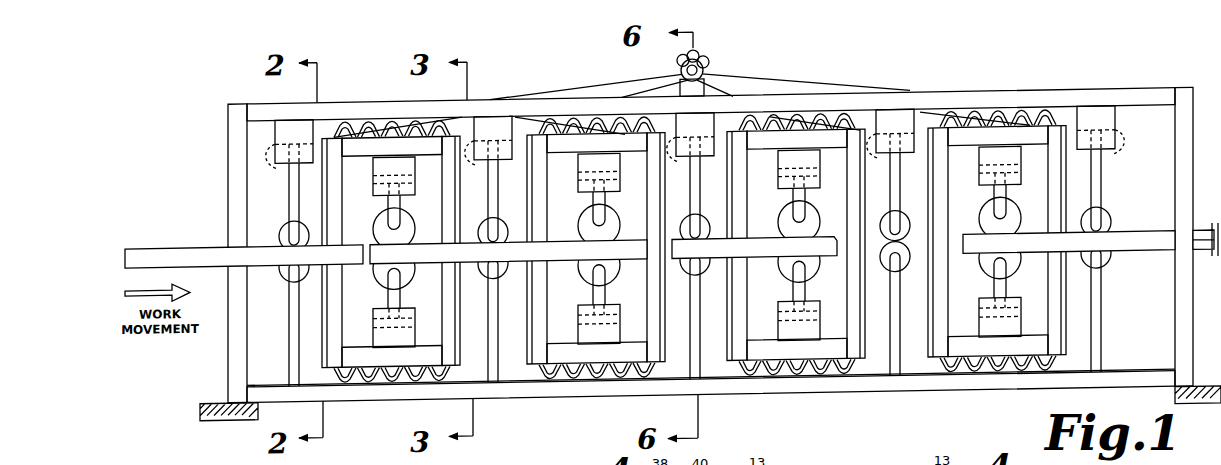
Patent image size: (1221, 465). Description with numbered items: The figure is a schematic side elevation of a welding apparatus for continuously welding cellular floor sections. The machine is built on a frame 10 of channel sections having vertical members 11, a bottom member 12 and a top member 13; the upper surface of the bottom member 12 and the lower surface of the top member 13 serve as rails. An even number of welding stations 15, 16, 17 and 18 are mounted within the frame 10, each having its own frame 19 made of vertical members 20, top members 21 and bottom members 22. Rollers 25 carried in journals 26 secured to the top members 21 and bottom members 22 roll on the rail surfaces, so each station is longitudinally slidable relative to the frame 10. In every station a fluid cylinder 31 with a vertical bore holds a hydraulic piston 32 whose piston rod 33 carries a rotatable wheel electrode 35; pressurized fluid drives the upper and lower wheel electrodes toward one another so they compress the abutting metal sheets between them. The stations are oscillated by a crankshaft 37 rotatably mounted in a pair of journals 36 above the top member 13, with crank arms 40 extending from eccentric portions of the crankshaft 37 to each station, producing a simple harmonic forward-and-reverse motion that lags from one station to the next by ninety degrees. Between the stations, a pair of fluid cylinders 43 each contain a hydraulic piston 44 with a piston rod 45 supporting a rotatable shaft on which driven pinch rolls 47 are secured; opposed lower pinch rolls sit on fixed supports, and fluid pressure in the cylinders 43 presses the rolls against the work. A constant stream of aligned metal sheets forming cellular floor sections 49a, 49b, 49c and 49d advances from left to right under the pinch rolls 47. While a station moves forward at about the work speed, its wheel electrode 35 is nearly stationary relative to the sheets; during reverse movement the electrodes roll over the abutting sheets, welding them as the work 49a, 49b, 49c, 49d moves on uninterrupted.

The frame 10 is at (1094, 94).
The vertical members 11 is at (232, 367).
The bottom member 12 is at (910, 392).
The top member 13 is at (1000, 97).
The welding station 15 is at (371, 357).
The welding station 16 is at (590, 357).
The welding station 17 is at (773, 355).
The welding station 18 is at (970, 359).
The frame 19 is at (455, 148).
The vertical members 20 is at (337, 362).
The top members 21 is at (1008, 148).
The bottom members 22 is at (1022, 357).
The rollers 25 is at (345, 116).
The journals 26 is at (362, 116).
The fluid cylinder 31 is at (1007, 168).
The hydraulic piston 32 is at (979, 179).
The piston rod 33 is at (1007, 192).
The wheel electrode 35 is at (987, 216).
The journals 36 is at (704, 76).
The crankshaft 37 is at (699, 62).
The crank arms 40 is at (648, 92).
The fluid cylinders 43 is at (1104, 133).
The hydraulic piston 44 is at (695, 157).
The piston rod 45 is at (1101, 170).
The pinch rolls 47 is at (1108, 218).
The cellular floor section 49a is at (158, 255).
The cellular floor section 49b is at (370, 248).
The cellular floor section 49c is at (742, 248).
The cellular floor section 49d is at (1080, 248).